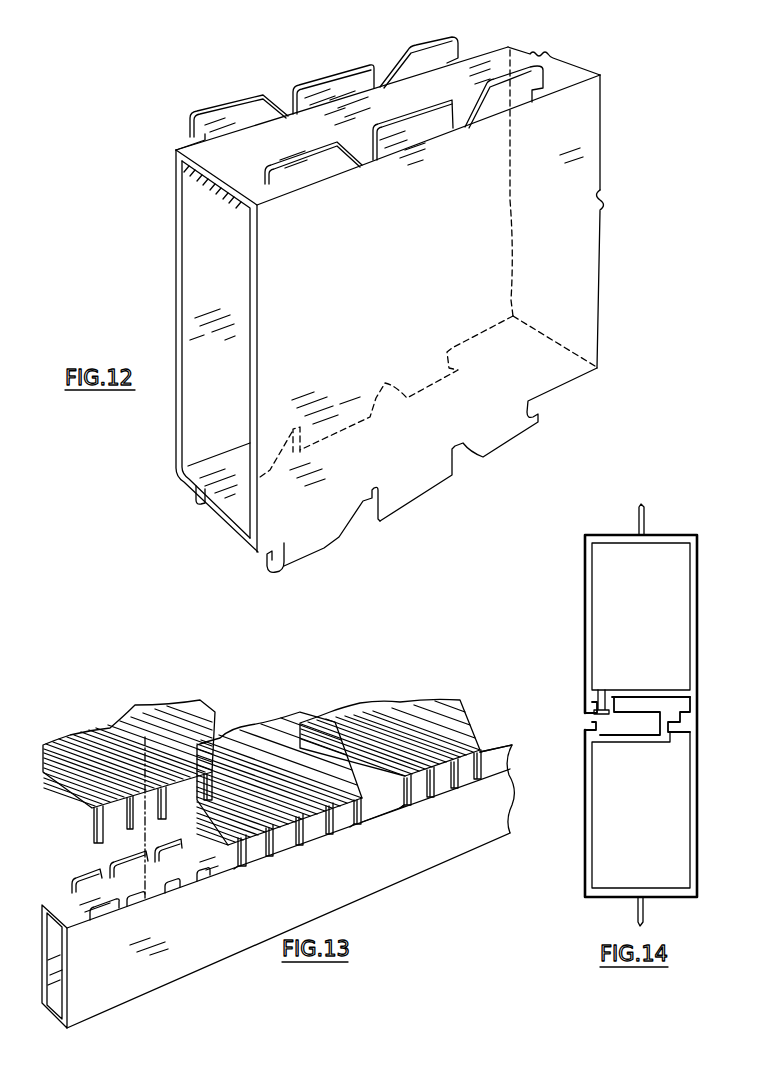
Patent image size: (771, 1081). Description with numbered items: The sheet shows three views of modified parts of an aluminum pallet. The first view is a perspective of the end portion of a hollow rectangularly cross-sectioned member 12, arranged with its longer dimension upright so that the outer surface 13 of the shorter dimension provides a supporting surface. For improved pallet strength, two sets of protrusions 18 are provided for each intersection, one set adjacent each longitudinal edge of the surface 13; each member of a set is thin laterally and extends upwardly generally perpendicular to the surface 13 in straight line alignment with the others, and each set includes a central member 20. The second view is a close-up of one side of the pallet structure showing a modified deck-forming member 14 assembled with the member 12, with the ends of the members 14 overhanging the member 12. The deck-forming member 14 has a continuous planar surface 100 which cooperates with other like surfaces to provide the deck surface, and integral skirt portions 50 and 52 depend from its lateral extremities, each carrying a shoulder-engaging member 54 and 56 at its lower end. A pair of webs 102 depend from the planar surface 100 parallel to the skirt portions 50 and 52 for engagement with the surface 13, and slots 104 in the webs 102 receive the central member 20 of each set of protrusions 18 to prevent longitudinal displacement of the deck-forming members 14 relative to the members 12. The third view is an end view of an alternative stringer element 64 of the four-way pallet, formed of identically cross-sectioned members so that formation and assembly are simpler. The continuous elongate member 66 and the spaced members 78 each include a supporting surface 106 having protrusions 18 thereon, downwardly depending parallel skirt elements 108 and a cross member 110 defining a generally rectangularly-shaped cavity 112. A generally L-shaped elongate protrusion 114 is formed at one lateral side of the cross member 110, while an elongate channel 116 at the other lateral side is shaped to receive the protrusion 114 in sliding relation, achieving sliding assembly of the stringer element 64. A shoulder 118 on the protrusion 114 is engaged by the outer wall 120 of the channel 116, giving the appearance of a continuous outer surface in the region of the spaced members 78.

In FIG. 12, the rectangularly cross-sectioned member 12 is at (583, 143).
In FIG. 12, the outer surface 13 is at (490, 62).
In FIG. 12, the set of protrusions 18 is at (369, 56).
In FIG. 14, the set of protrusions 18 is at (646, 518).
In FIG. 13, the deck-forming member 14 is at (247, 762).
In FIG. 13, the central member 20 is at (131, 862).
In FIG. 13, the skirt portion 50 is at (390, 787).
In FIG. 13, the skirt portion 52 is at (472, 765).
In FIG. 13, the shoulder-engaging member 54 is at (405, 785).
In FIG. 13, the shoulder-engaging member 56 is at (352, 822).
In FIG. 14, the stringer element 64 is at (701, 659).
In FIG. 14, the continuous elongate member 66 is at (584, 618).
In FIG. 14, the spaced member 78 is at (582, 817).
In FIG. 13, the planar surface 100 is at (423, 747).
In FIG. 13, the web 102 is at (127, 805).
In FIG. 13, the slot 104 is at (112, 735).
In FIG. 14, the supporting surface 106 is at (668, 535).
In FIG. 14, the skirt element 108 is at (693, 596).
In FIG. 14, the cross member 110 is at (630, 697).
In FIG. 14, the cavity 112 is at (622, 592).
In FIG. 14, the L-shaped protrusion 114 is at (686, 705).
In FIG. 14, the elongate channel 116 is at (601, 690).
In FIG. 14, the shoulder 118 is at (588, 716).
In FIG. 14, the outer wall 120 is at (590, 708).